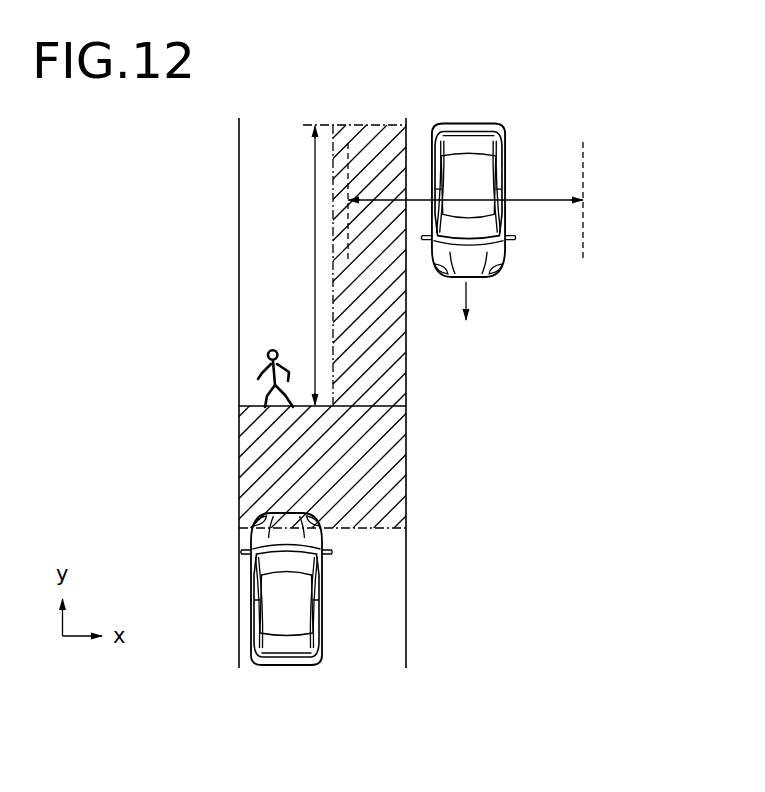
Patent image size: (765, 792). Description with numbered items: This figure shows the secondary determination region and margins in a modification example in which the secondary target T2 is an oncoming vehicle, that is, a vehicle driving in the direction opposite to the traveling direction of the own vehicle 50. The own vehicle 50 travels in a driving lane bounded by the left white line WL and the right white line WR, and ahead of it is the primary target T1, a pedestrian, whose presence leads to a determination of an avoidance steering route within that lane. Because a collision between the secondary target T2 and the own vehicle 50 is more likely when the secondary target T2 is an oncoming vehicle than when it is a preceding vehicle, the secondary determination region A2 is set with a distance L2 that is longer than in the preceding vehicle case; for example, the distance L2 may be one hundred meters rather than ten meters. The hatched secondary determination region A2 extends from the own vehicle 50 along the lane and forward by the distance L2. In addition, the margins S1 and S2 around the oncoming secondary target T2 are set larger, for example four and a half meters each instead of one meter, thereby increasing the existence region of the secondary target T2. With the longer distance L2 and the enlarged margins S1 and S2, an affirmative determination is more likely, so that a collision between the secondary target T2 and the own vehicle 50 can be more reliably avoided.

The own vehicle 50 is at (250, 640).
The primary target T1 is at (265, 378).
The secondary target T2 is at (507, 255).
The secondary determination region A2 is at (243, 465).
The distance L2 is at (293, 265).
The margin S1 is at (419, 190).
The margin S2 is at (533, 198).
The left white line WL is at (239, 594).
The right white line WR is at (408, 592).